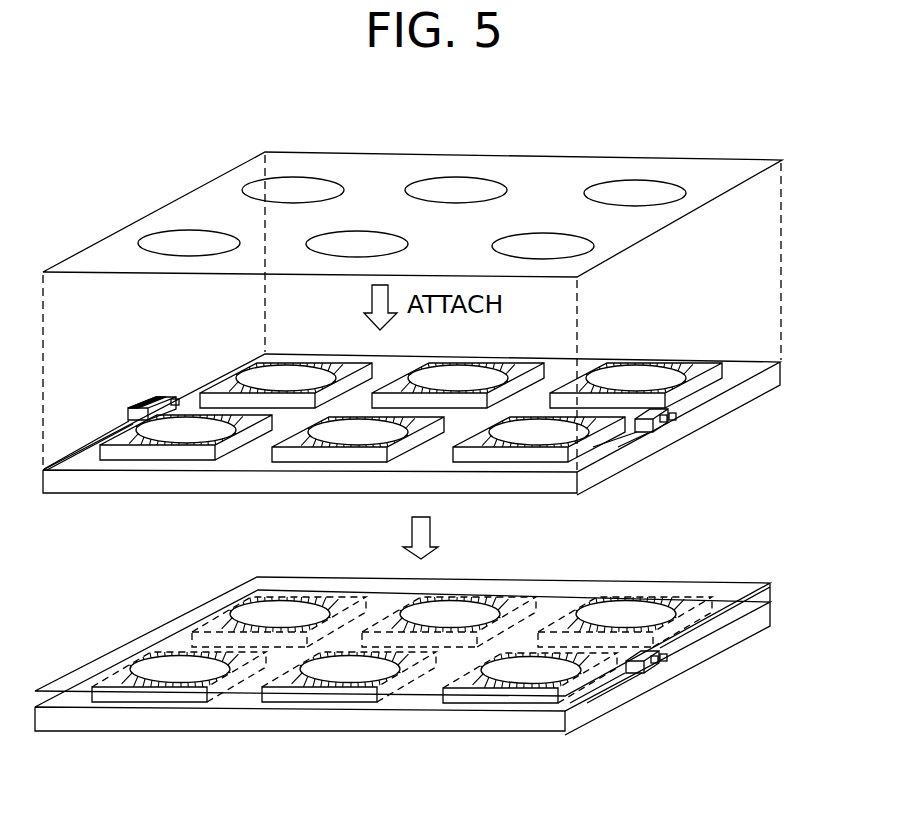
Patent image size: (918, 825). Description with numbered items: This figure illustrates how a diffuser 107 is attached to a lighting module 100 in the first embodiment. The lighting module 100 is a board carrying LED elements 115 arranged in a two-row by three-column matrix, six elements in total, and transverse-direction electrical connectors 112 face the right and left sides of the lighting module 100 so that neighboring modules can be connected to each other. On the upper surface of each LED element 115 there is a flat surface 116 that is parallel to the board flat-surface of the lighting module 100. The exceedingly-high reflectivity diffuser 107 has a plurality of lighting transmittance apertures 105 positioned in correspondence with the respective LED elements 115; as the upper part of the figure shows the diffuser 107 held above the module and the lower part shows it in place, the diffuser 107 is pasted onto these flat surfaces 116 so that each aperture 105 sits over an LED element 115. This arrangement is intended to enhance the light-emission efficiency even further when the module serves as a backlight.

The lighting module 100 is at (588, 478).
The lighting transmittance aperture 105 is at (673, 182).
The diffuser 107 is at (188, 216).
The transverse-direction electrical connector 112 is at (140, 408).
The LED element 115 is at (598, 443).
The flat surface 116 is at (137, 425).